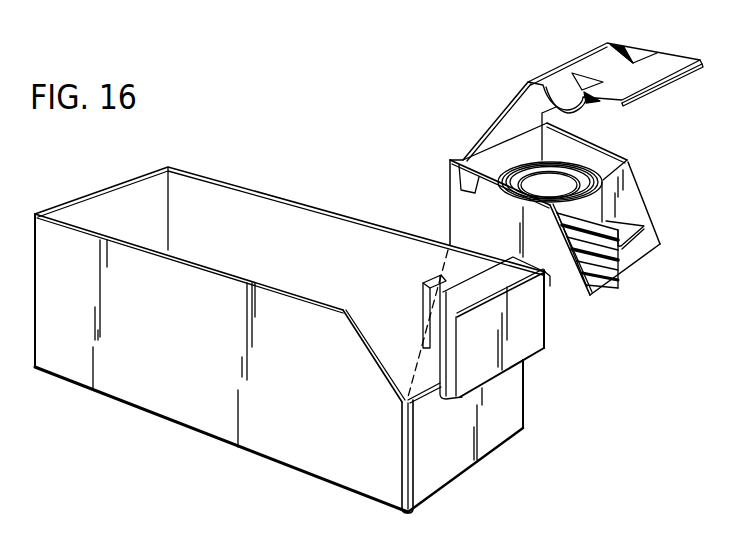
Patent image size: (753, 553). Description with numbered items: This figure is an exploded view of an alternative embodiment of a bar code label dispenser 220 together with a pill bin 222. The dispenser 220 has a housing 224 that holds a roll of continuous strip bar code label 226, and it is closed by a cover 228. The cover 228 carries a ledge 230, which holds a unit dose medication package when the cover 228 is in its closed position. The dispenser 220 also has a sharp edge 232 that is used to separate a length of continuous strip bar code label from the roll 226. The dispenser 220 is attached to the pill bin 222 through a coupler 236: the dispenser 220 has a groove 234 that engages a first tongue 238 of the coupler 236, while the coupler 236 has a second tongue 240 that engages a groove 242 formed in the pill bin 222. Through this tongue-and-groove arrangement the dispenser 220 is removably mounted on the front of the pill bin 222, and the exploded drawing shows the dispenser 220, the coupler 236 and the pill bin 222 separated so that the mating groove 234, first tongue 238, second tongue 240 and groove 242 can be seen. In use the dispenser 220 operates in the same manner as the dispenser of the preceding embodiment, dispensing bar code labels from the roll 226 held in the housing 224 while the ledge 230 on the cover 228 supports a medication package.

The bar code label dispenser 220 is at (637, 156).
The pill bin 222 is at (262, 463).
The housing 224 is at (646, 226).
The roll of continuous strip bar code label 226 is at (570, 163).
The cover 228 is at (607, 45).
The ledge 230 is at (698, 53).
The sharp edge 232 is at (594, 288).
The groove 234 is at (462, 158).
The coupler 236 is at (547, 374).
The first tongue 238 is at (545, 323).
The second tongue 240 is at (425, 305).
The groove 242 is at (405, 418).